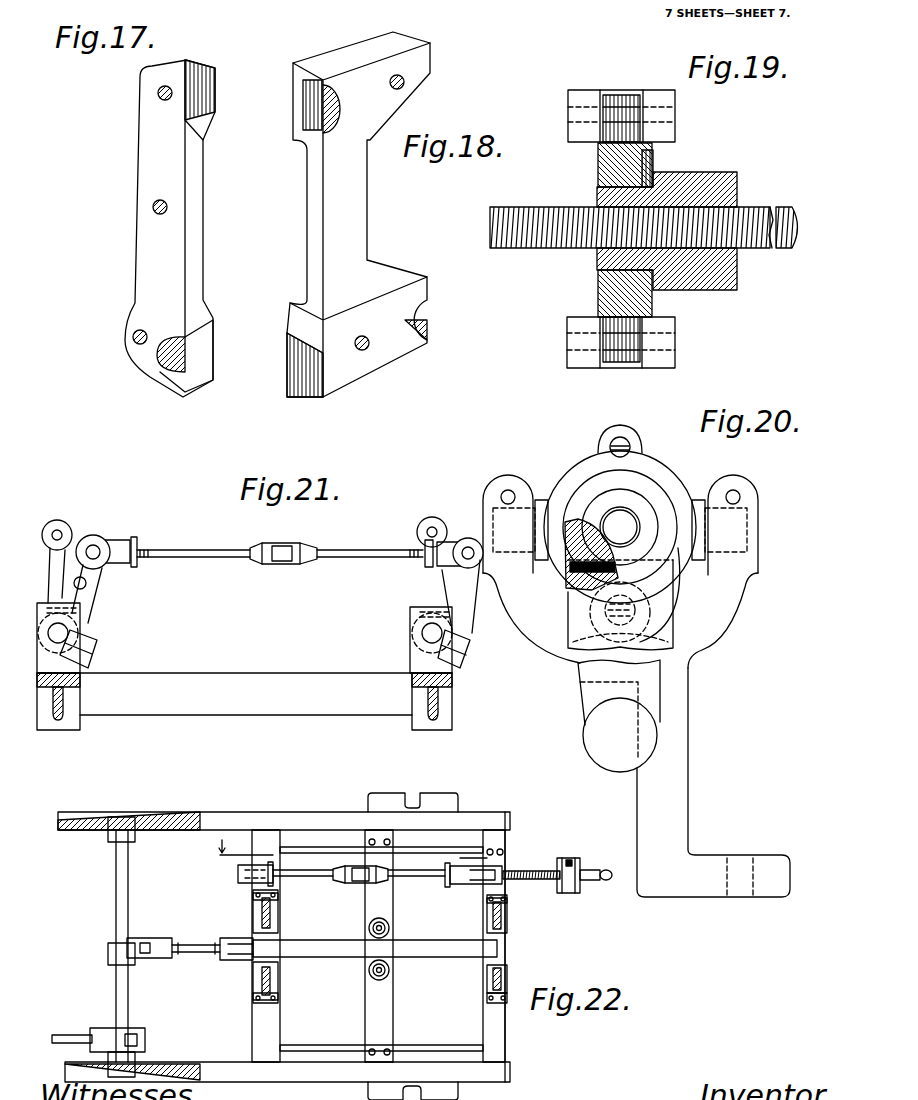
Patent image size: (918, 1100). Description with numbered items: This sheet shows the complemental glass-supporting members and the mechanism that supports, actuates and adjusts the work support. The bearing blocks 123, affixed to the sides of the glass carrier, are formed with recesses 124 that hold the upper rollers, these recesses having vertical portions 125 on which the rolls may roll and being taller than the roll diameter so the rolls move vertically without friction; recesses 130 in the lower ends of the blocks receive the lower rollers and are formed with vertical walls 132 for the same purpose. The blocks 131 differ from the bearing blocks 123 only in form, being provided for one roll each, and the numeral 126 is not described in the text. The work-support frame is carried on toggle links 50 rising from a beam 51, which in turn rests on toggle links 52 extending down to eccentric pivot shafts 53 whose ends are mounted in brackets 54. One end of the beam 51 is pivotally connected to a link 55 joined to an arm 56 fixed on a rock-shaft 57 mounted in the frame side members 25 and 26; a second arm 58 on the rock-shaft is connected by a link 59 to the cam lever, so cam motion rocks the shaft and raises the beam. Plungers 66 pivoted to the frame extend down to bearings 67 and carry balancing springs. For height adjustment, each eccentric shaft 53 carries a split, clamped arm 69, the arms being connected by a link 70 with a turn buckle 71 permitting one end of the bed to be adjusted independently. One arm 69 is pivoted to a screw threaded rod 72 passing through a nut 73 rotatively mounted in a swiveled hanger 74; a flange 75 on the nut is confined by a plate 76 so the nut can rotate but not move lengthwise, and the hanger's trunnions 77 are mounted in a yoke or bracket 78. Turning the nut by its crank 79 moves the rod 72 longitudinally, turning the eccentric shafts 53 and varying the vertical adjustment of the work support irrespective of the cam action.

In FIG. 22, the side member 25 is at (332, 1082).
In FIG. 22, the side member 26 is at (227, 823).
In FIG. 22, the toggle links 50 is at (510, 972).
In FIG. 22, the beam 51 is at (441, 958).
In FIG. 21, the toggle links 52 is at (438, 575).
In FIG. 21, the eccentric pivot shafts 53 is at (425, 633).
In FIG. 21, the brackets 54 is at (418, 667).
In FIG. 22, the brackets 54 is at (490, 1003).
In FIG. 22, the link 55 is at (222, 944).
In FIG. 22, the arm 56 is at (140, 945).
In FIG. 22, the rock-shaft 57 is at (120, 876).
In FIG. 22, the arm 58 is at (147, 1040).
In FIG. 22, the link 59 is at (67, 1037).
In FIG. 22, the rods or plungers 66 is at (369, 928).
In FIG. 22, the bearings 67 is at (393, 1032).
In FIG. 21, the arms 69 is at (460, 597).
In FIG. 22, the arms 69 is at (470, 884).
In FIG. 21, the link 70 is at (191, 551).
In FIG. 22, the link 70 is at (308, 878).
In FIG. 21, the turn buckle 71 is at (296, 565).
In FIG. 22, the turn buckle 71 is at (371, 883).
In FIG. 19, the screw threaded rod 72 is at (788, 250).
In FIG. 20, the screw threaded rod 72 is at (618, 526).
In FIG. 22, the screw threaded rod 72 is at (545, 880).
In FIG. 19, the nut 73 is at (738, 195).
In FIG. 20, the nut 73 is at (568, 555).
In FIG. 19, the swiveled hanger 74 is at (600, 178).
In FIG. 20, the swiveled hanger 74 is at (677, 493).
In FIG. 22, the swiveled hanger 74 is at (568, 858).
In FIG. 19, the flange 75 is at (652, 165).
In FIG. 19, the plate 76 is at (652, 300).
In FIG. 20, the plate 76 is at (652, 472).
In FIG. 19, the trunnions 77 is at (621, 362).
In FIG. 20, the trunnions 77 is at (733, 537).
In FIG. 19, the yoke or bracket 78 is at (676, 355).
In FIG. 20, the yoke or bracket 78 is at (682, 797).
In FIG. 22, the yoke or bracket 78 is at (541, 870).
In FIG. 19, the crank 79 is at (728, 290).
In FIG. 20, the crank 79 is at (655, 688).
In FIG. 22, the crank 79 is at (590, 873).
In FIG. 18, the bearing blocks 123 is at (358, 214).
In FIG. 18, the recesses 124 is at (322, 112).
In FIG. 18, the vertical portions 125 is at (412, 307).
In FIG. 17, the end block 126 is at (205, 94).
In FIG. 18, the end block 126 is at (300, 378).
In FIG. 17, the recesses 130 is at (205, 343).
In FIG. 18, the recesses 130 is at (413, 320).
In FIG. 17, the blocks 131 is at (170, 228).
In FIG. 17, the vertical walls 132 is at (162, 358).